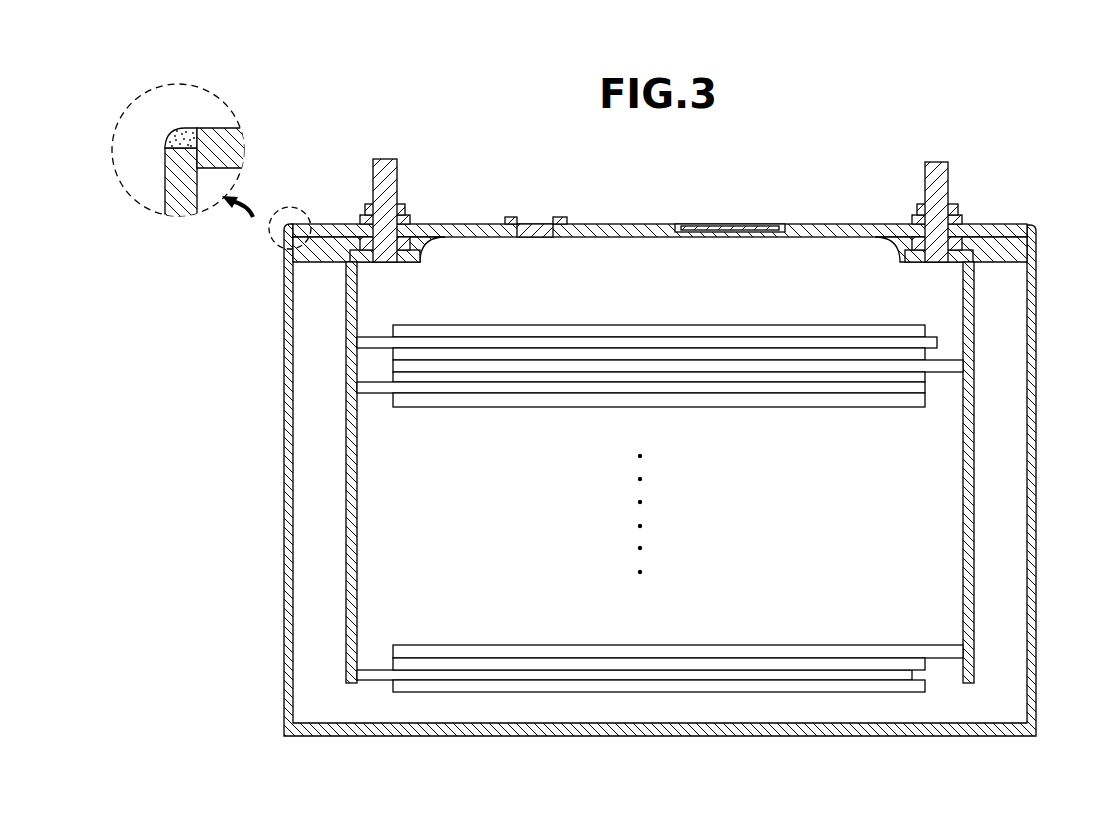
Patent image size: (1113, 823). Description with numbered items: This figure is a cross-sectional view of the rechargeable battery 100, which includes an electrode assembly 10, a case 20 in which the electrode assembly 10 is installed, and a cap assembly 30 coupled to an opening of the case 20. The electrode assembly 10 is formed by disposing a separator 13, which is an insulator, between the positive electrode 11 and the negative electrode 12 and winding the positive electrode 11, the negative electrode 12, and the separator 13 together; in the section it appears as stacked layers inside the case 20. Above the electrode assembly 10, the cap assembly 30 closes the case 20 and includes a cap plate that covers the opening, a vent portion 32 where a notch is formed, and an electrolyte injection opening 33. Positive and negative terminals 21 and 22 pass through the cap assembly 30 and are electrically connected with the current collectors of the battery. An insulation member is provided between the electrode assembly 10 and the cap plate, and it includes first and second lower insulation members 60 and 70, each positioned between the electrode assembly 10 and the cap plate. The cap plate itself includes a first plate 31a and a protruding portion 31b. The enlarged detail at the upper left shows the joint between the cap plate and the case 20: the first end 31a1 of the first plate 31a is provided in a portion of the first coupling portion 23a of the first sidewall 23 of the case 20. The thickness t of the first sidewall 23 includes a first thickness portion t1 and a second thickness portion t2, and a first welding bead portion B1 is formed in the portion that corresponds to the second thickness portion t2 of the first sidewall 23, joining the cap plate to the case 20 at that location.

The rechargeable battery 100 is at (816, 144).
The electrode assembly 10 is at (660, 557).
The positive electrode 11 is at (376, 675).
The negative electrode 12 is at (505, 652).
The separator 13 is at (603, 685).
The case 20 is at (283, 637).
The positive terminal 21 is at (385, 178).
The negative terminal 22 is at (930, 180).
The first sidewall 23 is at (172, 185).
The first coupling portion 23a is at (175, 128).
The cap assembly 30 is at (657, 218).
The first plate 31a is at (253, 128).
The first end 31a1 is at (240, 128).
The protruding portion 31b is at (237, 168).
The vent portion 32 is at (742, 226).
The electrolyte injection opening 33 is at (536, 220).
The first lower insulation member 60 is at (297, 246).
The second lower insulation member 70 is at (1030, 256).
The first welding bead portion B1 is at (168, 140).
The thickness t is at (148, 198).
The first thickness portion t1 is at (165, 95).
The second thickness portion t2 is at (148, 117).